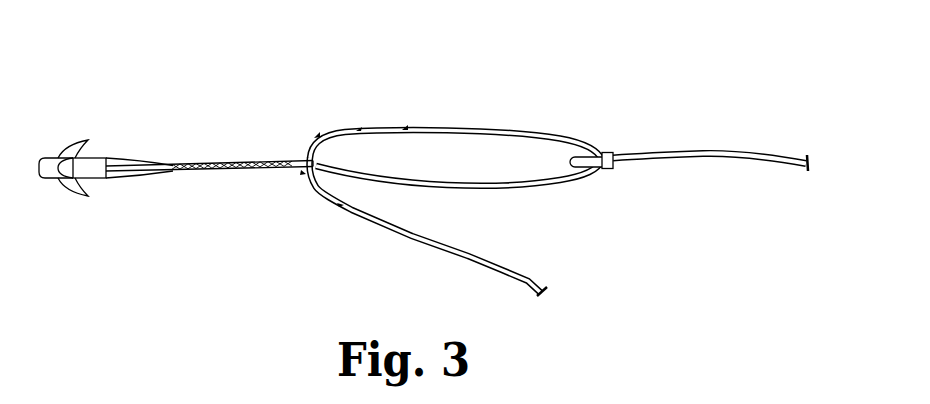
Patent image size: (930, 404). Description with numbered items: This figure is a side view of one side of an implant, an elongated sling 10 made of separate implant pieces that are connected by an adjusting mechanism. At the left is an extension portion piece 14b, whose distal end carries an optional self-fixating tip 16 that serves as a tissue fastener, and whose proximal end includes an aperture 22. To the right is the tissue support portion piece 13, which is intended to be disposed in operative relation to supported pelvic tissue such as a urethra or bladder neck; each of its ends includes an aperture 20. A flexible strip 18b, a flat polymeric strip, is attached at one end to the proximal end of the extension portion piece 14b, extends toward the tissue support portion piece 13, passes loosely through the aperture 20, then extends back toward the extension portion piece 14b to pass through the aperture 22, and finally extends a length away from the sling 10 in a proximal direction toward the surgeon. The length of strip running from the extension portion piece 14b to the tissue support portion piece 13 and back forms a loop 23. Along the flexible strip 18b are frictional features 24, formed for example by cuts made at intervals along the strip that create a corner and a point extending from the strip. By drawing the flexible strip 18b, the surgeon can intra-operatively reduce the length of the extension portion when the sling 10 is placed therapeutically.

The elongated sling 10 is at (563, 68).
The tissue support portion piece 13 is at (637, 165).
The extension portion piece 14b is at (210, 163).
The self-fixating tip 16 is at (76, 152).
The flexible strip 18b is at (492, 128).
The aperture 20 is at (608, 146).
The aperture 22 is at (303, 160).
The loop 23 is at (452, 94).
The frictional features 24 is at (406, 127).